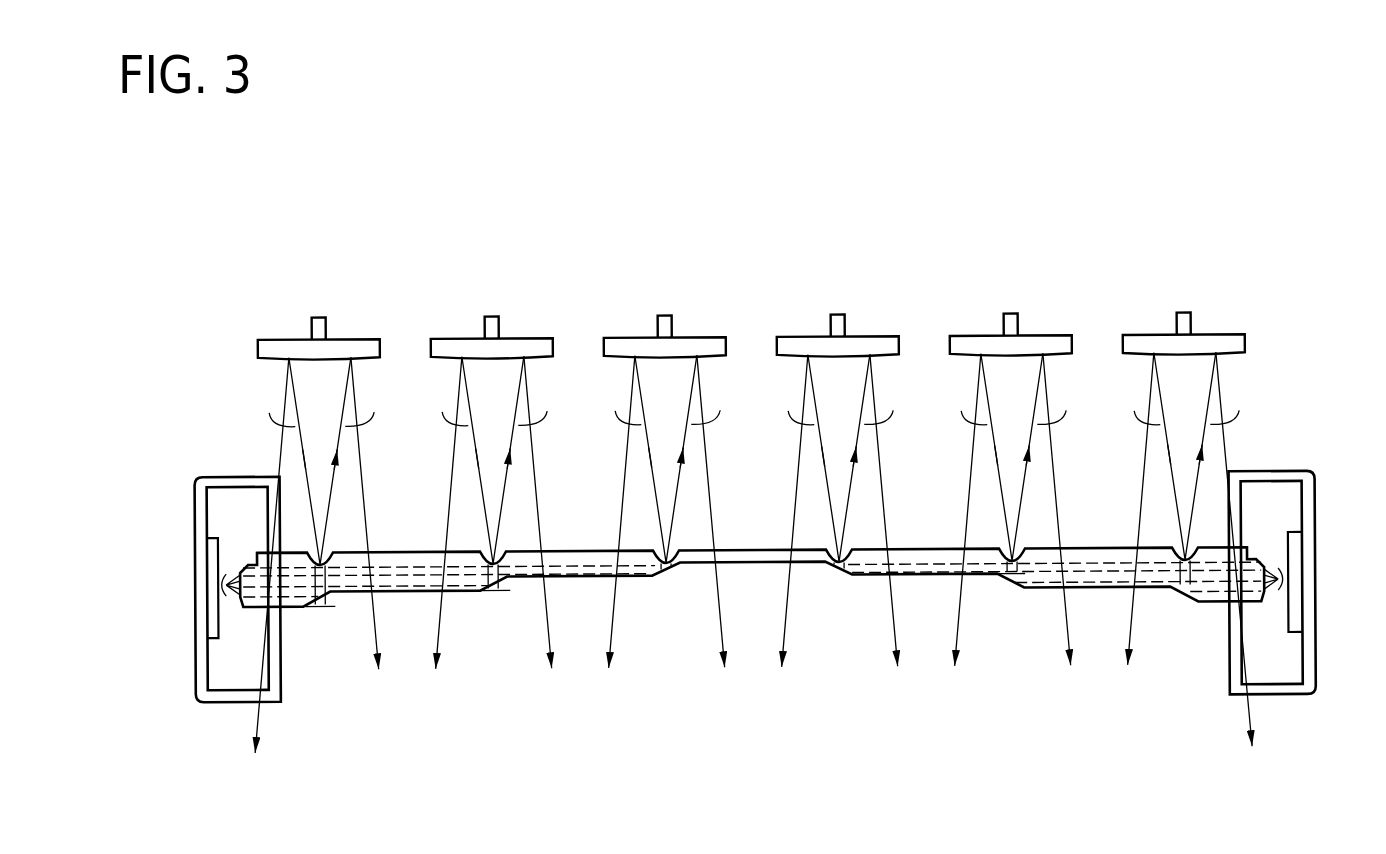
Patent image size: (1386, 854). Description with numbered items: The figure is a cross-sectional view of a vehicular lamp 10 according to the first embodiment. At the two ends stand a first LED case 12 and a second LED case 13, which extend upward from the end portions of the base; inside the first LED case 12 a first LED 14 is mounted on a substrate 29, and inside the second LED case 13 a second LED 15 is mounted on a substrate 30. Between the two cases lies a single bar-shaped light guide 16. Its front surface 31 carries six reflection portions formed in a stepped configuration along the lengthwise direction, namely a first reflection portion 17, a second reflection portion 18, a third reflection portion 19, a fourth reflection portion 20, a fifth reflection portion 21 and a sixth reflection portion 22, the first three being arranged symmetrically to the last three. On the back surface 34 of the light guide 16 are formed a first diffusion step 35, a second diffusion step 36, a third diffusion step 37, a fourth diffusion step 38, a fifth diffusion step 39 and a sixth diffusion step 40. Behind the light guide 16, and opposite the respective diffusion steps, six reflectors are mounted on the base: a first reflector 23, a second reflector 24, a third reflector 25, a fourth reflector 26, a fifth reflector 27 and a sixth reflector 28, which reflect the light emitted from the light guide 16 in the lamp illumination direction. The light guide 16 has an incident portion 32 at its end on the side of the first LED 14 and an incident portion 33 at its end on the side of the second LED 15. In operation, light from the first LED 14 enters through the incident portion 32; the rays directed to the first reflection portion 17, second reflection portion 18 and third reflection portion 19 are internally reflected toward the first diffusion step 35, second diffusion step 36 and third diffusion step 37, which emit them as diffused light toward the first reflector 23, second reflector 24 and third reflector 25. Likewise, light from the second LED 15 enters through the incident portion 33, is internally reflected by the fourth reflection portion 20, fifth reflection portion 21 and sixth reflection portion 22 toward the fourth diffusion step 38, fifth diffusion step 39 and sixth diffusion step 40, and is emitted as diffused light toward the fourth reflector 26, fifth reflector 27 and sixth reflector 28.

The vehicular lamp 10 is at (1133, 205).
The first LED case 12 is at (203, 478).
The second LED case 13 is at (1310, 478).
The first LED 14 is at (230, 572).
The second LED 15 is at (1277, 575).
The light guide 16 is at (748, 552).
The first reflection portion 17 is at (322, 608).
The second reflection portion 18 is at (496, 593).
The third reflection portion 19 is at (666, 575).
The fourth reflection portion 20 is at (1183, 601).
The fifth reflection portion 21 is at (1010, 579).
The sixth reflection portion 22 is at (838, 574).
The first reflector 23 is at (348, 340).
The second reflector 24 is at (521, 340).
The third reflector 25 is at (694, 340).
The fourth reflector 26 is at (1213, 340).
The fifth reflector 27 is at (1040, 340).
The sixth reflector 28 is at (867, 340).
The substrate 29 is at (207, 535).
The substrate 30 is at (1302, 536).
The front surface 31 is at (578, 579).
The incident portion 32 is at (233, 607).
The incident portion 33 is at (1266, 605).
The back surface 34 is at (580, 551).
The first diffusion step 35 is at (322, 552).
The second diffusion step 36 is at (488, 552).
The third diffusion step 37 is at (660, 553).
The fourth diffusion step 38 is at (1180, 553).
The fifth diffusion step 39 is at (1014, 553).
The sixth diffusion step 40 is at (842, 553).